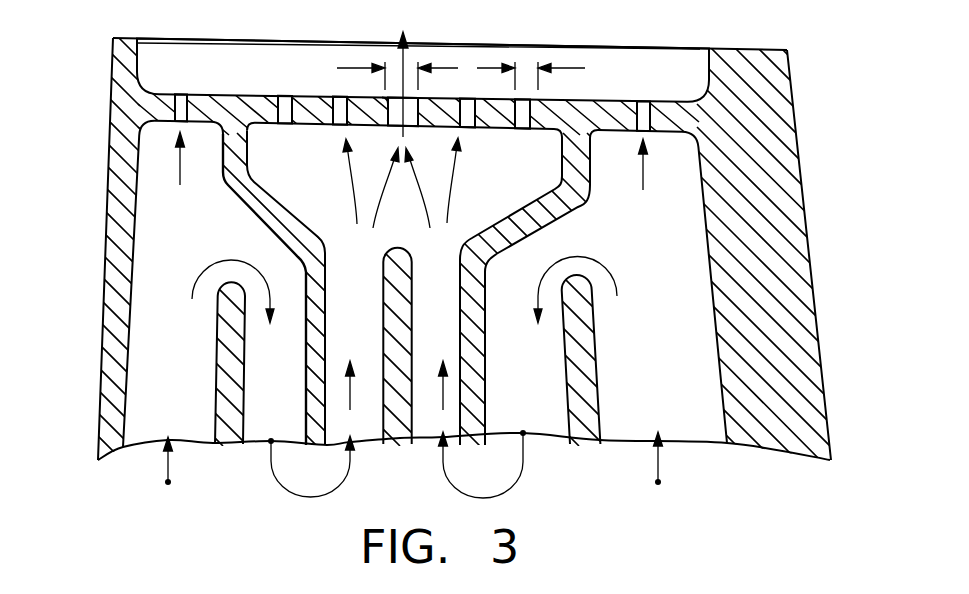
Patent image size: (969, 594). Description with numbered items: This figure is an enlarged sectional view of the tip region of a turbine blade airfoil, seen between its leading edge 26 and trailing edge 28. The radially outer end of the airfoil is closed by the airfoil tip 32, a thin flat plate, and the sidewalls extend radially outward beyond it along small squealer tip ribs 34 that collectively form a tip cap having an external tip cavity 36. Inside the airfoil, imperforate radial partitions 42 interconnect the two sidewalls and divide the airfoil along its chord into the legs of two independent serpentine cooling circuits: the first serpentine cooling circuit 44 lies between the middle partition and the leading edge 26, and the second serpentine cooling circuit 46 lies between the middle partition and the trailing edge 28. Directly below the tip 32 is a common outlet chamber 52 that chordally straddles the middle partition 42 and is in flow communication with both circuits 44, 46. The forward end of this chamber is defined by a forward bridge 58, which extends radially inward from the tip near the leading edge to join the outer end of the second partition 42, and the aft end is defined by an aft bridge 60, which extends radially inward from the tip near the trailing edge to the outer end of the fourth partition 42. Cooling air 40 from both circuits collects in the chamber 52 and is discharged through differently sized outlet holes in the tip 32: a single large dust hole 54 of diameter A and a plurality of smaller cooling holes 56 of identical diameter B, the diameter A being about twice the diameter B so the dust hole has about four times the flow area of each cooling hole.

The leading edge 26 is at (100, 378).
The trailing edge 28 is at (809, 250).
The airfoil tip 32 is at (243, 93).
The squealer tip ribs 34 is at (113, 36).
The tip cavity 36 is at (633, 72).
The cooling air 40 is at (210, 265).
The partitions 42 is at (383, 283).
The first serpentine cooling circuit 44 is at (168, 468).
The second serpentine cooling circuit 46 is at (657, 465).
The common outlet chamber 52 is at (487, 201).
The dust hole 54 is at (383, 96).
The cooling holes 56 is at (527, 131).
The forward bridge 58 is at (290, 206).
The aft bridge 60 is at (560, 218).
The dust hole diameter A is at (350, 64).
The cooling hole diameter B is at (478, 68).